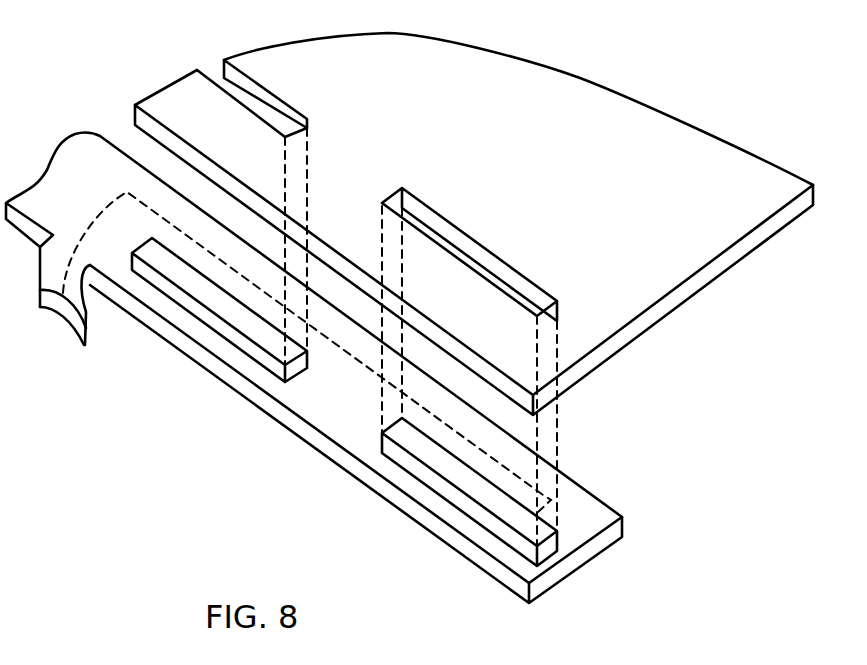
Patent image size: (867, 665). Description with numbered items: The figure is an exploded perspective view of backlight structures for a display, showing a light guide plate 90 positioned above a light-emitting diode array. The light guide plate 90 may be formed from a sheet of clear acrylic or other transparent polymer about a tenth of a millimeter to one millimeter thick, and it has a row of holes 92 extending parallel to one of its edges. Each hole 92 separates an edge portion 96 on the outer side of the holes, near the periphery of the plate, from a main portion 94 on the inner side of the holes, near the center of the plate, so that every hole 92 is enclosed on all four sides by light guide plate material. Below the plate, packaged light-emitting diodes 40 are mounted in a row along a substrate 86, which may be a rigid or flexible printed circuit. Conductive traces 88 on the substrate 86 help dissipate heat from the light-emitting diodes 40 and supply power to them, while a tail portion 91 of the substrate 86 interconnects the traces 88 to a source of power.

The packaged light-emitting diodes 40 is at (260, 328).
The light-emitting diode array substrate 86 is at (575, 537).
The traces 88 is at (513, 477).
The light guide plate 90 is at (668, 267).
The tail portion 91 is at (83, 300).
The holes 92 is at (265, 115).
The main portion 94 is at (690, 134).
The edge portion 96 is at (473, 274).